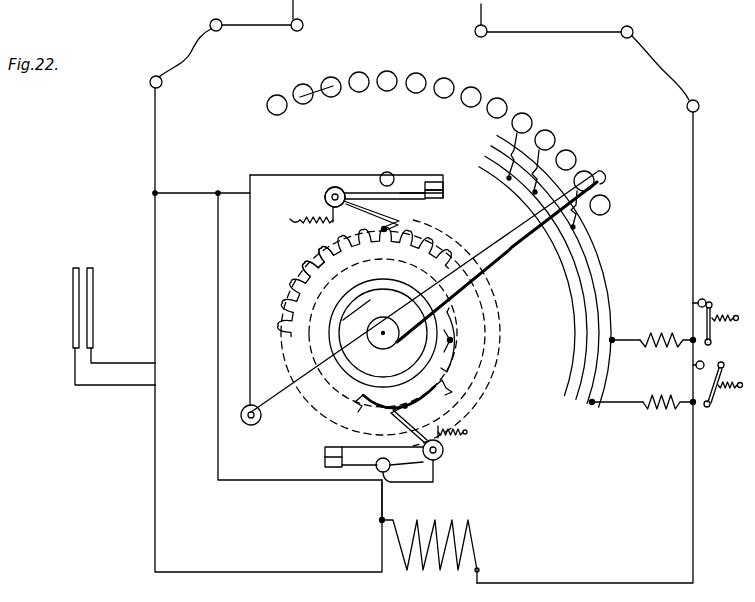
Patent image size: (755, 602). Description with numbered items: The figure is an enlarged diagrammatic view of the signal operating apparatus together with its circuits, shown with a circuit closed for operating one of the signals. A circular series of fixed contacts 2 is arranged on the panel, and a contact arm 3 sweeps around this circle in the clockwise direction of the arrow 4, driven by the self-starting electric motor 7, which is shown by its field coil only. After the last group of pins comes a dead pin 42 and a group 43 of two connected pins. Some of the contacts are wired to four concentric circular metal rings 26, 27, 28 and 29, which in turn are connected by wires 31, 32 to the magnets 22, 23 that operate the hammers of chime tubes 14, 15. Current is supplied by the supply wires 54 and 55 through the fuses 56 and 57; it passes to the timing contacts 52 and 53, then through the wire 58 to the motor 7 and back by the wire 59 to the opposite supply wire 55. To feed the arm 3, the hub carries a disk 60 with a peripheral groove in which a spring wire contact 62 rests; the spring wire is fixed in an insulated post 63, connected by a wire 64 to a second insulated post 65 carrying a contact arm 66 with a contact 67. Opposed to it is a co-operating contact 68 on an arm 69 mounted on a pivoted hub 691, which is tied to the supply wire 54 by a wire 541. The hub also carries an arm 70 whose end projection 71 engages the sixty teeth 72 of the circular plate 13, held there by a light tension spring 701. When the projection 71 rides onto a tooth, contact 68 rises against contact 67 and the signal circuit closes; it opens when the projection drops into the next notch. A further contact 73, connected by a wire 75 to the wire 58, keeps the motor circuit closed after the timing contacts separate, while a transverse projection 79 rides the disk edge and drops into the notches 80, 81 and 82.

The fixed contacts 2 is at (424, 80).
The contact arm 3 is at (503, 243).
The arrow 4 is at (444, 348).
The self-starting electric motor 7 is at (452, 518).
The circular plate 13 is at (304, 276).
The chime tube 14 is at (705, 296).
The chime tube 15 is at (705, 362).
The magnet 22 is at (653, 330).
The magnet 23 is at (660, 392).
The outer circular metal ring 26 is at (592, 240).
The circular metal ring 27 is at (588, 272).
The circular metal ring 28 is at (583, 298).
The inner circular metal ring 29 is at (573, 325).
The wire 31 is at (625, 339).
The wire 32 is at (606, 400).
The dead pin 42 is at (278, 95).
The group of two connected pins 43 is at (306, 84).
The contact 52 is at (93, 267).
The contact 53 is at (76, 266).
The supply wire 54 is at (140, 262).
The wire 541 is at (200, 188).
The supply wire 55 is at (490, 28).
The fuse 56 is at (190, 53).
The fuse 57 is at (666, 73).
The wire 58 is at (153, 455).
The wire 59 is at (694, 193).
The disk 60 is at (383, 333).
The spring wire contact 62 is at (290, 384).
The insulated post 63 is at (248, 425).
The wire 64 is at (236, 318).
The insulated post 65 is at (388, 172).
The contact arm 66 is at (420, 177).
The contact 67 is at (444, 183).
The co-operating contact 68 is at (444, 194).
The arm 69 is at (346, 191).
The hub 691 is at (335, 187).
The arm 70 is at (392, 466).
The tension spring 701 is at (297, 215).
The end projection 71 is at (383, 233).
The teeth 72 is at (330, 240).
The contact 73 is at (324, 462).
The wire 75 is at (380, 500).
The transverse projection 79 is at (397, 412).
The notch 80 is at (355, 410).
The notch 81 is at (447, 390).
The notch 82 is at (452, 320).